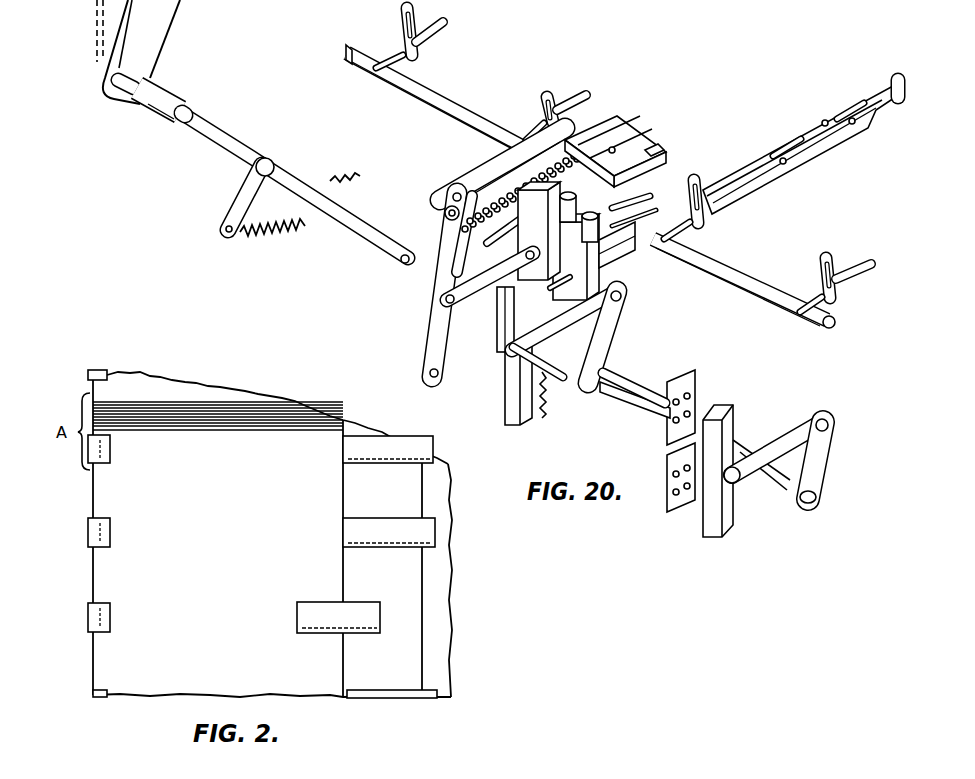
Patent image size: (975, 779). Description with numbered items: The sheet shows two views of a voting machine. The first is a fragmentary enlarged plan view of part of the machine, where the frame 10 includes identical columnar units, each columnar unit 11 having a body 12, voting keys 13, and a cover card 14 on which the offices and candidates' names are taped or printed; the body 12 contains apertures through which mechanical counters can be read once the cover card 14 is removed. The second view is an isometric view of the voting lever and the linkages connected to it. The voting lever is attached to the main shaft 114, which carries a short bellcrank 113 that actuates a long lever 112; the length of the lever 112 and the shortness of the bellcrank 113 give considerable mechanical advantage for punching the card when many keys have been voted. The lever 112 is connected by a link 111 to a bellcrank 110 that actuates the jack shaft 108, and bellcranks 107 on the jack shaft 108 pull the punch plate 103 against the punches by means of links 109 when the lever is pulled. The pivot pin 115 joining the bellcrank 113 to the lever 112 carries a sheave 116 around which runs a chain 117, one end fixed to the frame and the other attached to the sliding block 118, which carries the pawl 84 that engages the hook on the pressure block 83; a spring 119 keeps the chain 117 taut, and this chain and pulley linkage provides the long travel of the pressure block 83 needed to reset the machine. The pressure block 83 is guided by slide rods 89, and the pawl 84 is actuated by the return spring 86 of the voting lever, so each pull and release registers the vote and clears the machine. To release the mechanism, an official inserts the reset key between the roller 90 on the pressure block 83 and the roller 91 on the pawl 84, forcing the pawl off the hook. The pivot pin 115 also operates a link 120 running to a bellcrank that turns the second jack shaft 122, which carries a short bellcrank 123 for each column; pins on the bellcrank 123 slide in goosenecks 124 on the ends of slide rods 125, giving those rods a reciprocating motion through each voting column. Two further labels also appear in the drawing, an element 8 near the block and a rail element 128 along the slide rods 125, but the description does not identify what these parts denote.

In FIG. 20, the pin 8 is at (617, 152).
In FIG. 20, the frame 10 is at (646, 150).
In FIG. 2, the columnar unit 11 is at (278, 682).
In FIG. 2, the body 12 is at (175, 693).
In FIG. 2, the voting keys 13 is at (386, 520).
In FIG. 2, the cover card 14 is at (251, 512).
In FIG. 20, the pressure block 83 is at (618, 266).
In FIG. 20, the pawl 84 is at (580, 206).
In FIG. 20, the return spring 86 is at (305, 218).
In FIG. 20, the slide rods 89 is at (650, 226).
In FIG. 20, the roller 90 is at (600, 234).
In FIG. 20, the roller 91 is at (518, 226).
In FIG. 20, the punch plate 103 is at (508, 404).
In FIG. 20, the bellcranks 107 is at (618, 326).
In FIG. 20, the jack shaft 108 is at (650, 388).
In FIG. 20, the links 109 is at (568, 316).
In FIG. 20, the bellcrank 110 is at (500, 310).
In FIG. 20, the link 111 is at (480, 303).
In FIG. 20, the lever 112 is at (436, 333).
In FIG. 20, the bellcrank 113 is at (400, 266).
In FIG. 20, the main shaft 114 is at (183, 98).
In FIG. 20, the pivot pin 115 is at (445, 213).
In FIG. 20, the sheave 116 is at (454, 234).
In FIG. 20, the chain 117 is at (512, 196).
In FIG. 20, the sliding block 118 is at (544, 235).
In FIG. 20, the spring 119 is at (612, 150).
In FIG. 20, the link 120 is at (482, 170).
In FIG. 20, the second jack shaft 122 is at (440, 112).
In FIG. 20, the short bellcrank 123 is at (390, 46).
In FIG. 20, the goosenecks 124 is at (848, 273).
In FIG. 20, the slide rods 125 is at (436, 30).
In FIG. 20, the rail 128 is at (874, 103).